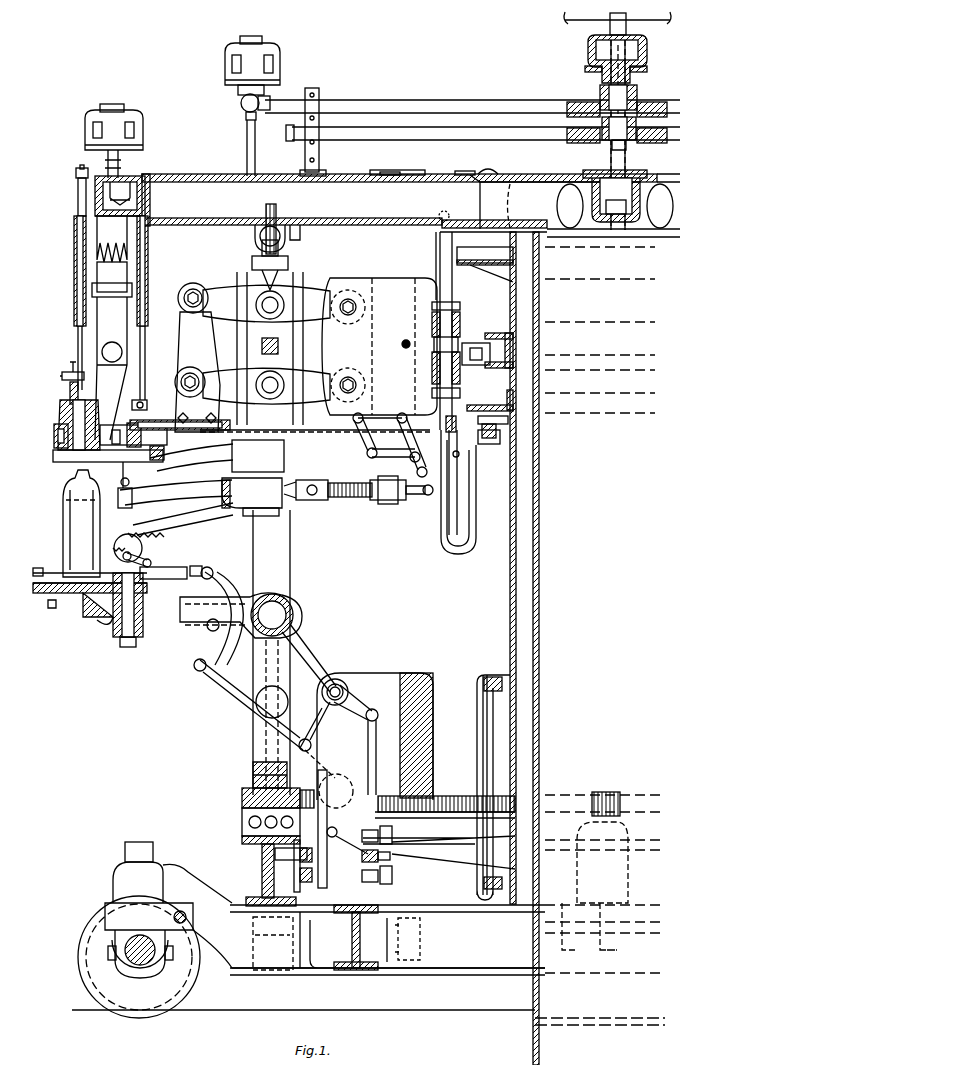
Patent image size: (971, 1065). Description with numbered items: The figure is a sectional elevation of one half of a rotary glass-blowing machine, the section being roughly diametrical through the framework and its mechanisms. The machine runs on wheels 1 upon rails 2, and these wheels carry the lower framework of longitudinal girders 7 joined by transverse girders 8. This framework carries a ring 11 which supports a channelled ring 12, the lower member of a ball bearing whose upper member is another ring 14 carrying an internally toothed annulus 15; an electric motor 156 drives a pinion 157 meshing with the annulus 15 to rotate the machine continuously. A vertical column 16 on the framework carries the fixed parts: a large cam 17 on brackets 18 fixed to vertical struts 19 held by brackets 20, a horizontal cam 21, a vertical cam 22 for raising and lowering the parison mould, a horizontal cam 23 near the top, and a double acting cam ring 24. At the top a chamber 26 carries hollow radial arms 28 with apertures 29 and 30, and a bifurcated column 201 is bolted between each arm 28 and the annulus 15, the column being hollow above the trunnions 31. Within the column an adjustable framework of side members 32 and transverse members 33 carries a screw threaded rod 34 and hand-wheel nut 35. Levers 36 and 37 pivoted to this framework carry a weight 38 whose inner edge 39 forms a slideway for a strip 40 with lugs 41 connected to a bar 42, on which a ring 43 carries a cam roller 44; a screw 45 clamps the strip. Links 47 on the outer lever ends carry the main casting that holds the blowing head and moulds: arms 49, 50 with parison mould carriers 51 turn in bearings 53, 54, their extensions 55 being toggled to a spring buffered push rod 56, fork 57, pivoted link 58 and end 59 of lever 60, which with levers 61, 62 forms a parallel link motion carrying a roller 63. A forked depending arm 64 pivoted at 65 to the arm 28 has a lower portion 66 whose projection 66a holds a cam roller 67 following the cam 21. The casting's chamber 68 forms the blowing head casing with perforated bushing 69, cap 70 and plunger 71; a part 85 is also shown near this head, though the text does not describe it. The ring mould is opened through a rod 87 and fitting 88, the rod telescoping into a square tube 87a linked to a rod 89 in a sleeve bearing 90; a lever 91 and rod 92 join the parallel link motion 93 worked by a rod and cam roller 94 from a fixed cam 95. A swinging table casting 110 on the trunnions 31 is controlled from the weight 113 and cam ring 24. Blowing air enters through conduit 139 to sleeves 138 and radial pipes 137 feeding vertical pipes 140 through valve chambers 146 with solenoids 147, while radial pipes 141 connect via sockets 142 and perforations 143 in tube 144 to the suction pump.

The wheels 1 is at (80, 960).
The rails 2 is at (195, 1010).
The longitudinally disposed girders 7 is at (387, 943).
The transverse girders 8 is at (352, 933).
The ring 11 is at (264, 875).
The channelled ring 12 is at (244, 840).
The ring 14 is at (242, 818).
The internally toothed annulus 15 is at (242, 797).
The vertical column 16 is at (512, 495).
The large cam 17 is at (390, 860).
The brackets 18 is at (438, 862).
The vertical struts 19 is at (478, 822).
The brackets 20 is at (496, 678).
The horizontal cam 21 is at (485, 408).
The vertical cam 22 is at (500, 333).
The horizontal cam 23 is at (490, 270).
The cam 24 is at (296, 868).
The chamber 26 is at (555, 206).
The hollow arm 28 is at (300, 225).
The aperture 29 is at (262, 225).
The aperture 30 is at (78, 219).
The trunnions 31 is at (288, 612).
The side members 32 is at (240, 330).
The transverse members 33 is at (285, 348).
The screw threaded rod 34 is at (280, 222).
The nut 35 is at (290, 265).
The lever of the first order 36 is at (200, 292).
The lever of the first order 37 is at (240, 374).
The weight 38 is at (379, 346).
The inner edge 39 is at (430, 280).
The strip 40 is at (420, 390).
The projecting lugs 41 is at (460, 305).
The bar 42 is at (460, 320).
The ring 43 is at (440, 346).
The cam roller 44 is at (480, 368).
The screw 45 is at (406, 340).
The links 47 is at (185, 348).
The arm 49 is at (185, 470).
The arm 50 is at (220, 488).
The parison mould carriers 51 is at (132, 496).
The bearing 53 is at (315, 451).
The bearing 54 is at (280, 490).
The extensions 55 is at (310, 500).
The spring buffered push rod 56 is at (342, 498).
The fork 57 is at (386, 500).
The pivoted link 58 is at (412, 493).
The end of lever 59 is at (430, 494).
The lever 60 is at (414, 440).
The lever 61 is at (362, 450).
The lever 62 is at (375, 452).
The roller 63 is at (458, 470).
The depending arm 64 is at (440, 252).
The pivot 65 is at (449, 218).
The lower portion 66 is at (446, 522).
The projection 66a is at (490, 445).
The cam roller 67 is at (500, 437).
The chamber 68 is at (58, 452).
The bushing 69 is at (58, 435).
The cap 70 is at (62, 415).
The plunger 71 is at (65, 405).
The plate 85 is at (124, 455).
The rod 87 is at (145, 380).
The square tube 87a is at (150, 268).
The fitting 88 is at (160, 420).
The rod 89 is at (146, 190).
The sleeve bearing 90 is at (150, 205).
The lever 91 is at (148, 178).
The rod 92 is at (170, 177).
The parallel link motion 93 is at (385, 172).
The rod and cam roller 94 is at (488, 170).
The fixed cam 95 is at (540, 178).
The casting 110 is at (240, 596).
The weight 113 is at (375, 736).
The radial pipes 137 is at (420, 110).
The sleeves 138 is at (603, 98).
The conduit 139 is at (592, 50).
The vertical pipes 140 is at (250, 158).
The radial pipes 141 is at (470, 128).
The sockets 142 is at (600, 162).
The perforations 143 is at (625, 140).
The tube 144 is at (628, 96).
The valve chambers 146 is at (243, 106).
The solenoids 147 is at (281, 60).
The electric motor 156 is at (388, 945).
The pinion 157 is at (600, 792).
The bifurcated column 201 is at (290, 556).